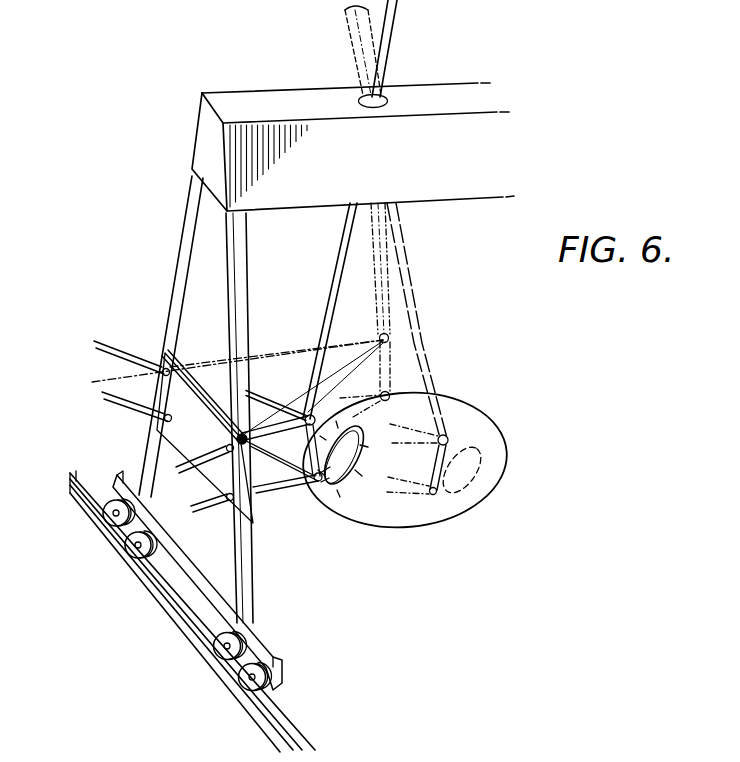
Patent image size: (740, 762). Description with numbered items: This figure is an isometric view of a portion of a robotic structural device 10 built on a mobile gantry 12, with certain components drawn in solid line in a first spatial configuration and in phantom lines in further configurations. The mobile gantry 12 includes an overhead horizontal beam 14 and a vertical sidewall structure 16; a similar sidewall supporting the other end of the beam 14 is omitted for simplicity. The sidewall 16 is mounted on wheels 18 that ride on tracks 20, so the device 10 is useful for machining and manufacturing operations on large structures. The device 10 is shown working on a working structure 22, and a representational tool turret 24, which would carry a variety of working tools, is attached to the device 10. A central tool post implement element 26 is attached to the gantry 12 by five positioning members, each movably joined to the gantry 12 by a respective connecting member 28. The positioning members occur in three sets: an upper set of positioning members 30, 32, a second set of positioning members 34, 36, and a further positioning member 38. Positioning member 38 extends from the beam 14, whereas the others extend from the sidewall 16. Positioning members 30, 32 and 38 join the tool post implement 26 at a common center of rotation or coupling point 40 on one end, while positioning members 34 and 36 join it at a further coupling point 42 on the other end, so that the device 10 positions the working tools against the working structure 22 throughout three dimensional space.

The robotic structural device 10 is at (160, 222).
The mobile gantry 12 is at (268, 94).
The overhead horizontal beam 14 is at (424, 180).
The vertical sidewall structure 16 is at (181, 437).
The wheels 18 is at (132, 542).
The tracks 20 is at (287, 717).
The working structure 22 is at (450, 502).
The tool turret 24 is at (352, 475).
The tool post implement element 26 is at (315, 483).
The connecting members 28 is at (258, 492).
The positioning member 30 is at (213, 463).
The positioning member 32 is at (133, 353).
The positioning member 34 is at (210, 512).
The positioning member 36 is at (112, 407).
The further positioning member 38 is at (390, 44).
The coupling point 40 is at (310, 413).
The further coupling point 42 is at (314, 470).